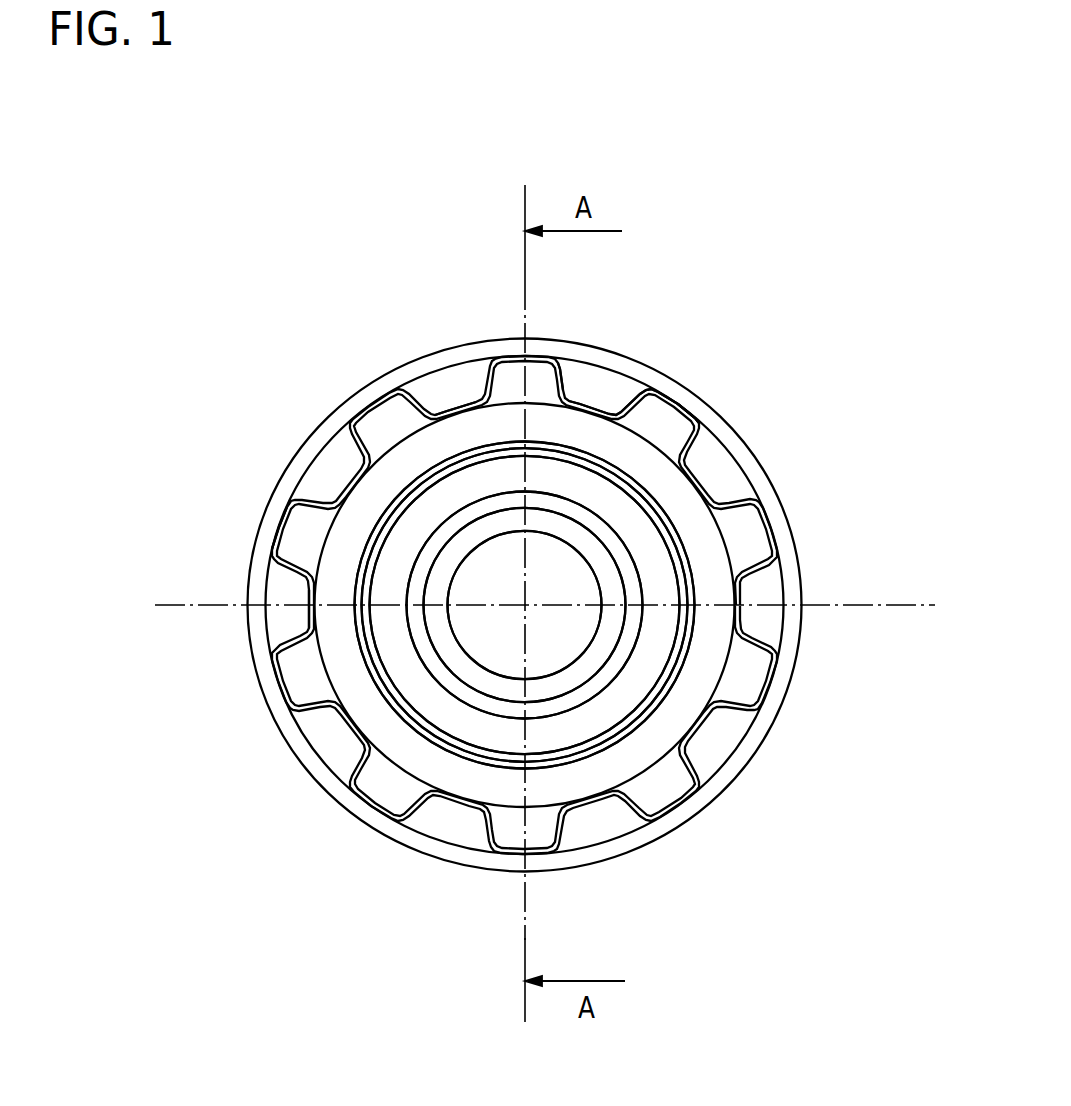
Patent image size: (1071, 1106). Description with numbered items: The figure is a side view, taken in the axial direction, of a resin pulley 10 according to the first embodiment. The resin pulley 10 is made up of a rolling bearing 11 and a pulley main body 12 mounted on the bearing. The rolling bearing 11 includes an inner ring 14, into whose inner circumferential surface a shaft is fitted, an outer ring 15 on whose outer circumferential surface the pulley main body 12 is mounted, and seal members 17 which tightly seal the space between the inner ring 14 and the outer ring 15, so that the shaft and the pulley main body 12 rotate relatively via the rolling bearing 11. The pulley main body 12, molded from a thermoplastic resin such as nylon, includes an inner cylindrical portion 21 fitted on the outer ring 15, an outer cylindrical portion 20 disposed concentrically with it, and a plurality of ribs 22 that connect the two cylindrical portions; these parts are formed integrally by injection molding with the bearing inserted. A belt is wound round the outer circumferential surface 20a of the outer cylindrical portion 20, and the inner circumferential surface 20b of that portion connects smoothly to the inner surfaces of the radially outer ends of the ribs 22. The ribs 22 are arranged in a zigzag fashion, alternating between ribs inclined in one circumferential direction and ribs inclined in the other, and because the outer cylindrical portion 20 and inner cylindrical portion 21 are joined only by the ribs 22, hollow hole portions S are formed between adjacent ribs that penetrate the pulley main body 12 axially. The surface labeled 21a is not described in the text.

The resin pulley 10 is at (670, 300).
The rolling bearing 11 is at (655, 563).
The pulley main body 12 is at (752, 440).
The inner ring 14 is at (572, 678).
The outer ring 15 is at (677, 667).
The seal members 17 is at (643, 680).
The outer cylindrical portion 20 is at (485, 350).
The outer circumferential surface 20a is at (588, 350).
The inner circumferential surface 20b is at (608, 380).
The inner cylindrical portion 21 is at (400, 465).
The inner surface of sleeve ring 21a is at (360, 555).
The ribs 22 is at (775, 387).
The hollow hole portions S is at (282, 620).